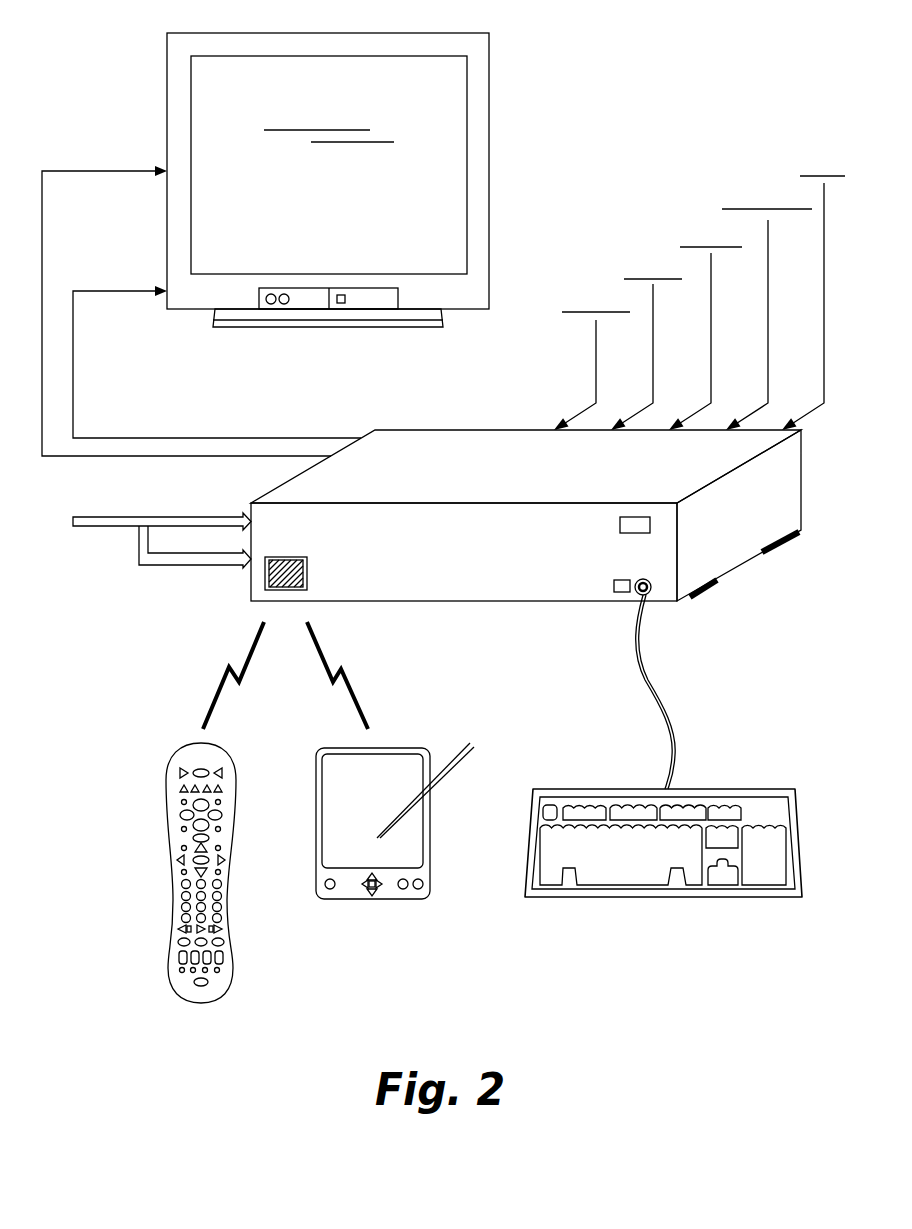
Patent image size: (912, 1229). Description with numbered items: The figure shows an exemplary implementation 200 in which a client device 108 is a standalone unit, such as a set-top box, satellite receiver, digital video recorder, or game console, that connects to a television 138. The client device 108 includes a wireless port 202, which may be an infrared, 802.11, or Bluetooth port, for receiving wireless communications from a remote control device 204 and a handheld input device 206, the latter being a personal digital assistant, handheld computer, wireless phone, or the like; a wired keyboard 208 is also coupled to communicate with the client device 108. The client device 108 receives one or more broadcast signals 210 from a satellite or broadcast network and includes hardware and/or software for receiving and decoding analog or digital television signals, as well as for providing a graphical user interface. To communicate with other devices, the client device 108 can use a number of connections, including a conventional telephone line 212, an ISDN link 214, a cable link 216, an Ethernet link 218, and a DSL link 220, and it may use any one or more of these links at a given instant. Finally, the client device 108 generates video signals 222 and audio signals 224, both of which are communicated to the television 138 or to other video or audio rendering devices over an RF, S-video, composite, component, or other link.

The exemplary implementation 200 is at (609, 57).
The client device 108 is at (437, 428).
The television 138 is at (443, 262).
The wireless port 202 is at (298, 557).
The remote control device 204 is at (168, 767).
The handheld input device 206 is at (390, 747).
The wired keyboard 208 is at (709, 788).
The broadcast signals 210 is at (125, 528).
The telephone line 212 is at (596, 273).
The ISDN link 214 is at (653, 237).
The cable link 216 is at (710, 207).
The Ethernet link 218 is at (768, 172).
The DSL link 220 is at (823, 138).
The video signal(s) 222 is at (131, 204).
The audio signal(s) 224 is at (131, 320).